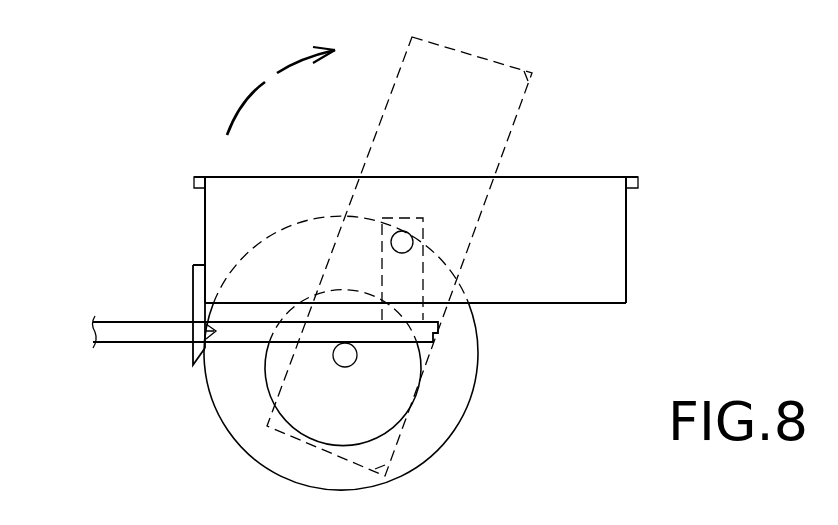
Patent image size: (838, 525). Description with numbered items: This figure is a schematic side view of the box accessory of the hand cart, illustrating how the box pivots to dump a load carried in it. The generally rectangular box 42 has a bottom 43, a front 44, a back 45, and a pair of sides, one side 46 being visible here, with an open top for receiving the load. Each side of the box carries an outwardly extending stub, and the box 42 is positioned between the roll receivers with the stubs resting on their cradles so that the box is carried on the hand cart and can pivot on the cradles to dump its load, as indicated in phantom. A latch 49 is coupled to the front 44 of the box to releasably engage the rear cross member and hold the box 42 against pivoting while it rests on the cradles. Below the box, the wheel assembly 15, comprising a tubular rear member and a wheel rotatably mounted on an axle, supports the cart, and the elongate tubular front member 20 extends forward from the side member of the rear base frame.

The wheel assembly 15 is at (448, 453).
The front member 20 is at (125, 343).
The box 42 is at (437, 228).
The bottom 43 is at (550, 303).
The front 44 is at (205, 212).
The back 45 is at (626, 212).
The side 46 is at (602, 277).
The latch 49 is at (199, 356).